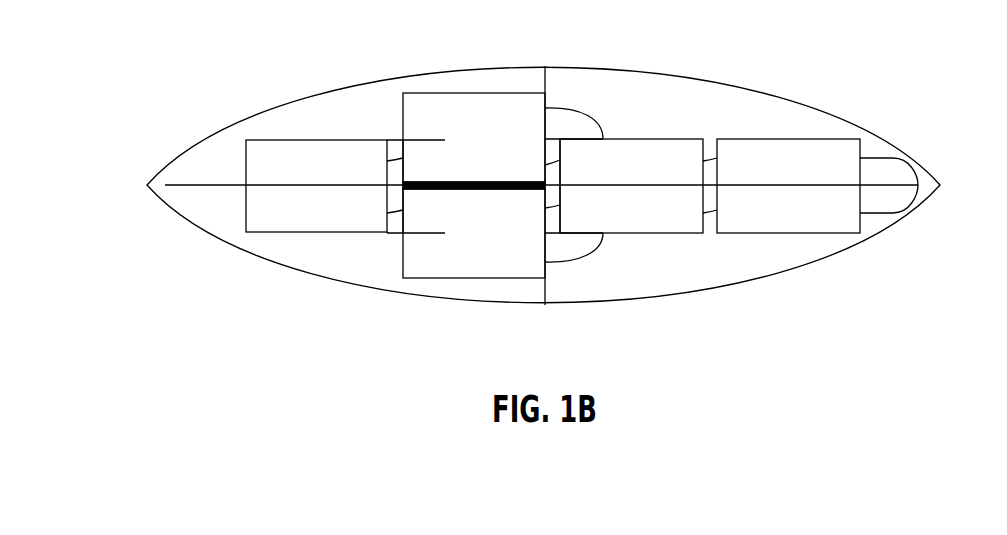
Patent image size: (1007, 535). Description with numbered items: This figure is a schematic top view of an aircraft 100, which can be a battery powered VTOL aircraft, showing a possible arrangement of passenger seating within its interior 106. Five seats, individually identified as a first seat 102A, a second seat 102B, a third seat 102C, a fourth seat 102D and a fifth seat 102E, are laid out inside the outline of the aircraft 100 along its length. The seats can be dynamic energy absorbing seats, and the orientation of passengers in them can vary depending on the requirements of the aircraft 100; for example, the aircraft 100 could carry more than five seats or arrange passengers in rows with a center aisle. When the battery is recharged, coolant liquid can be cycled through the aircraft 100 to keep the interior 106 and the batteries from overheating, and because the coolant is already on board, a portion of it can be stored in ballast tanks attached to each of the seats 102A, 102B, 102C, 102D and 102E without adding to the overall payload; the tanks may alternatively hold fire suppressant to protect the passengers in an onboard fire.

The aircraft 100 is at (888, 141).
The interior 106 is at (200, 146).
The seat 102A is at (313, 156).
The seat 102B is at (444, 114).
The seat 102C is at (450, 257).
The seat 102D is at (657, 155).
The seat 102E is at (770, 153).